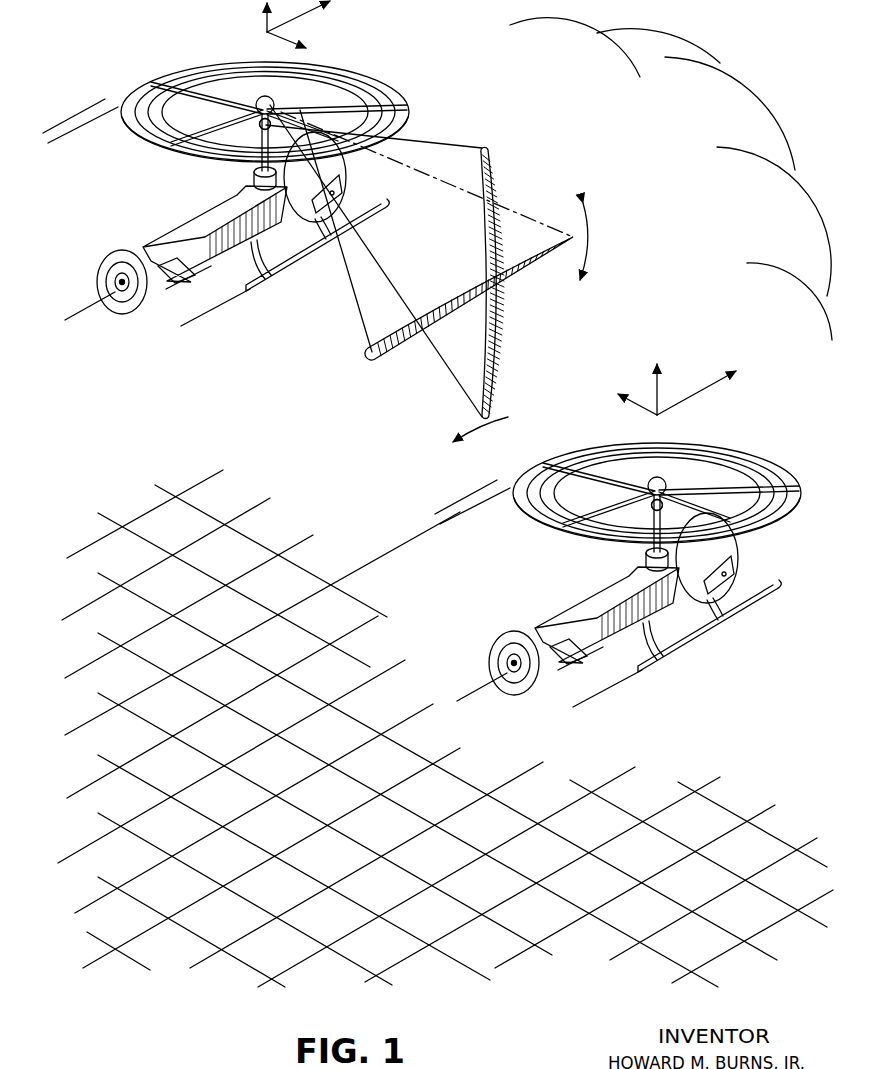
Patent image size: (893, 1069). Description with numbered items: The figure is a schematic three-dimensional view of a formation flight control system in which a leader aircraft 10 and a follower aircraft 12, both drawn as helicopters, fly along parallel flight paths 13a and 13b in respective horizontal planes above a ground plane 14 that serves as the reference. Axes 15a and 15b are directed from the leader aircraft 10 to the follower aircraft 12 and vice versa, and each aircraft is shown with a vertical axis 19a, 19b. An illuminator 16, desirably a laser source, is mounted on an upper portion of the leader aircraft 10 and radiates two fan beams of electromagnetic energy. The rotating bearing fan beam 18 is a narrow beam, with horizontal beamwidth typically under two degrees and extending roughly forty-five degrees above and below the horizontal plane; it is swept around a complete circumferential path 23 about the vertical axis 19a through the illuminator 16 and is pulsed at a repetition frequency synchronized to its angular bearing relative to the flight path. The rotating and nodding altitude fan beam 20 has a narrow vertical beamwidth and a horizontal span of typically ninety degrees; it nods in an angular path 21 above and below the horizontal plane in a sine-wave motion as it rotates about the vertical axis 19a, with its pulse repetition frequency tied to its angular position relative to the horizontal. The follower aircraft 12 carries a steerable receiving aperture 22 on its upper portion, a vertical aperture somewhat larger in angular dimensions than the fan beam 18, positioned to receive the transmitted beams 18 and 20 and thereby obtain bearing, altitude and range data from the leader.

The leader aircraft 10 is at (175, 366).
The follower aircraft 12 is at (701, 681).
The flight path of leader aircraft 13a is at (313, 10).
The flight path of follower aircraft 13b is at (693, 397).
The ground plane 14 is at (285, 775).
The axis from leader to follower 15a is at (272, 36).
The axis from follower to leader 15b is at (640, 412).
The illuminator 16 is at (262, 122).
The bearing fan beam 18 is at (490, 169).
The vertical axis through illuminator 19a is at (263, 15).
The vertical axis of follower aircraft 19b is at (658, 384).
The altitude fan beam 20 is at (398, 367).
The angular nodding path 21 is at (598, 245).
The steerable receiving aperture 22 is at (652, 508).
The circumferential path 23 is at (491, 433).